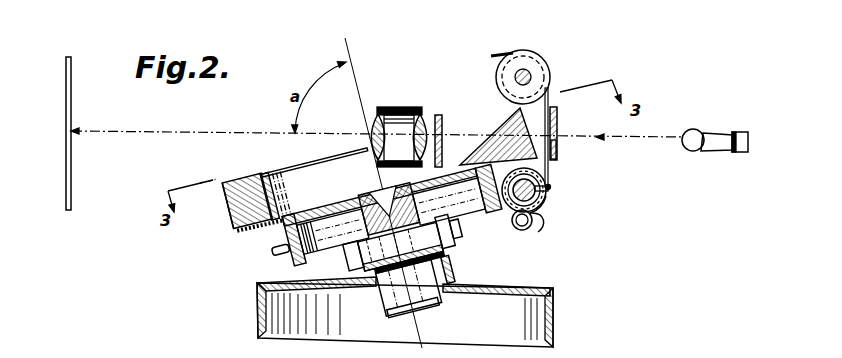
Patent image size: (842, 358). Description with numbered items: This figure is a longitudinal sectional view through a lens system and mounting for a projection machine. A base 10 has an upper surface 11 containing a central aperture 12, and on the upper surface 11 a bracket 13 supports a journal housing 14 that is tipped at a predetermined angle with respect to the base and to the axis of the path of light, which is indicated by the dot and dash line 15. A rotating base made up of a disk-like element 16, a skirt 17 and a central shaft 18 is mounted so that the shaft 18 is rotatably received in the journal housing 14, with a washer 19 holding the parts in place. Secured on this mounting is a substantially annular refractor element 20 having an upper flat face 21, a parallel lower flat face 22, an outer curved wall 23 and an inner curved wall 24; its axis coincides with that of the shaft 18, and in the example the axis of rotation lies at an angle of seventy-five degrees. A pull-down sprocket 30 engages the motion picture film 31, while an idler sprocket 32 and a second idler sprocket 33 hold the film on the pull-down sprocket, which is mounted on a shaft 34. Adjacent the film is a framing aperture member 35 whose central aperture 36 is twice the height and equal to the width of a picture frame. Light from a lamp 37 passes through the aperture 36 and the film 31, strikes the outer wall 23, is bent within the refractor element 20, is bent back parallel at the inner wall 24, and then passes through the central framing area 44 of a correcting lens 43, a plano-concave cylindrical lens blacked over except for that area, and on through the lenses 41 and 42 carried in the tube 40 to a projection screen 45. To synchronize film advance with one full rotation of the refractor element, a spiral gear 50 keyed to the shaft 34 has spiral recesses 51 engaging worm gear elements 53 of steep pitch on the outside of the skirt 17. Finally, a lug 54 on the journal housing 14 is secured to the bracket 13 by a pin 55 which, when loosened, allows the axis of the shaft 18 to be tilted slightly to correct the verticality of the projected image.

The base 10 is at (555, 323).
The upper surface 11 is at (513, 285).
The central aperture 12 is at (445, 296).
The bracket 13 is at (346, 270).
The journal housing 14 is at (386, 300).
The dot and dash line 15 is at (185, 131).
The disk-like element 16 is at (336, 205).
The skirt 17 is at (281, 258).
The central shaft 18 is at (405, 196).
The washer 19 is at (427, 310).
The refractor element 20 is at (295, 157).
The upper flat face 21 is at (247, 180).
The lower flat face 22 is at (246, 236).
The outer curved wall 23 is at (235, 208).
The inner curved wall 24 is at (270, 196).
The pull-down sprocket 30 is at (541, 208).
The motion picture film 31 is at (549, 92).
The idler sprocket 32 is at (530, 52).
The second idler sprocket 33 is at (540, 233).
The shaft 34 is at (551, 187).
The framing aperture member 35 is at (558, 111).
The central aperture 36 is at (557, 147).
The lamp 37 is at (700, 128).
The tube 40 is at (393, 108).
The lens 41 is at (424, 114).
The lens 42 is at (374, 114).
The correcting lens 43 is at (441, 118).
The central framing area 44 is at (490, 127).
The projection screen 45 is at (66, 97).
The spiral gear 50 is at (545, 201).
The spiral recesses 51 is at (537, 196).
The worm gear elements 53 is at (514, 228).
The lug 54 is at (447, 249).
The pin 55 is at (455, 234).